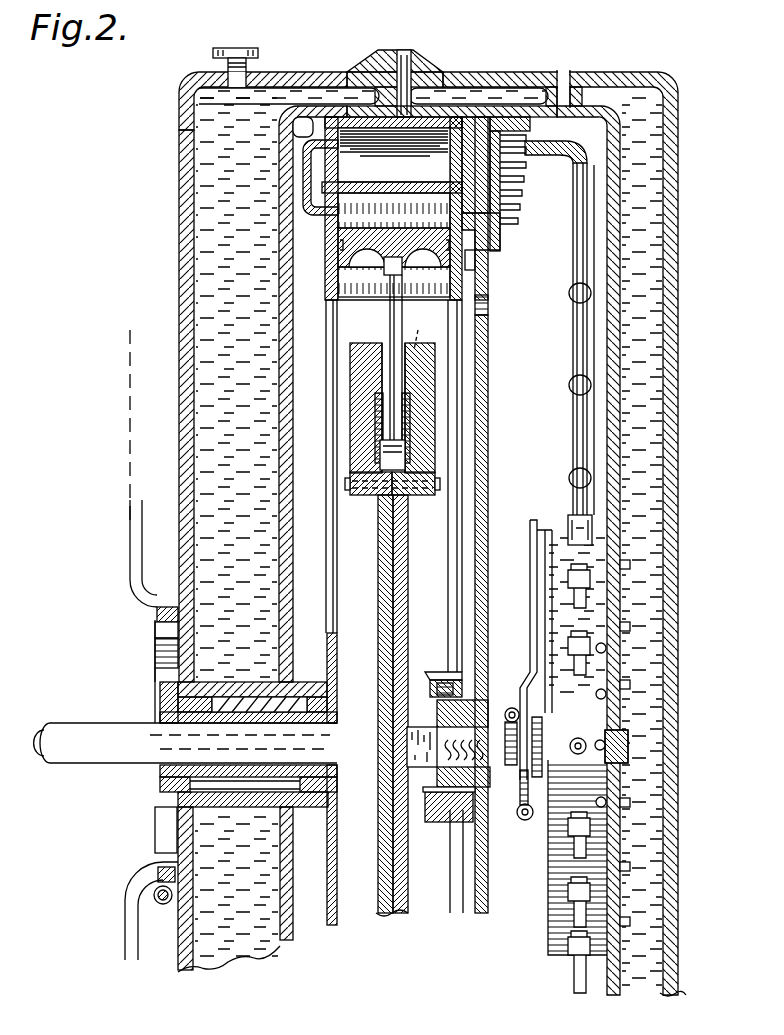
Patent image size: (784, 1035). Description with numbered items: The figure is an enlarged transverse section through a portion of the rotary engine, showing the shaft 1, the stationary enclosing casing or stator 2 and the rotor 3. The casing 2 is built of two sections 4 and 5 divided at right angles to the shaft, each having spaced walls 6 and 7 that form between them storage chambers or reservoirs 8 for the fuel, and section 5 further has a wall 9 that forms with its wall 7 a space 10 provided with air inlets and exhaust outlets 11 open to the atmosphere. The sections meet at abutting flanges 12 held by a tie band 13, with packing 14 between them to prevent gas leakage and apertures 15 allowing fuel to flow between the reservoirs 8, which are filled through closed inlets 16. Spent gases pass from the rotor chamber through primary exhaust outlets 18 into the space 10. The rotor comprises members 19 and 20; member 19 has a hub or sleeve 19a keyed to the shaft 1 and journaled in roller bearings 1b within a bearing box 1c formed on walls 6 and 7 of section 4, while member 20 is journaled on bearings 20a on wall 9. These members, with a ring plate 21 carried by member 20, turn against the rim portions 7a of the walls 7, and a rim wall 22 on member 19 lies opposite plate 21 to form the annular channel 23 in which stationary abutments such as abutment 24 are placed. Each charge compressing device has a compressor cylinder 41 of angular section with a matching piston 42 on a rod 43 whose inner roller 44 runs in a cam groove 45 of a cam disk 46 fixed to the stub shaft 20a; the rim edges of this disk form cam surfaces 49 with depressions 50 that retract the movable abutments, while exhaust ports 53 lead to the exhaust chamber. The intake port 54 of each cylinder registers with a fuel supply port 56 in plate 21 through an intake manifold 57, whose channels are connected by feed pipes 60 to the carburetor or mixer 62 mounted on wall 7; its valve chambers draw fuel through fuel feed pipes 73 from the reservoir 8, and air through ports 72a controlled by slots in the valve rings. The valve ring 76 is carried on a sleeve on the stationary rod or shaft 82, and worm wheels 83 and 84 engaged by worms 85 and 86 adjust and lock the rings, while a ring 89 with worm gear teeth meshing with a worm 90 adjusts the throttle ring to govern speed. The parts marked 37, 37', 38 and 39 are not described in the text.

The shaft 1 is at (72, 768).
The roller bearings 1b is at (282, 698).
The bearing box 1c is at (252, 690).
The stationary enclosing casing or stator 2 is at (178, 470).
The rotor 3 is at (470, 272).
The casing section 4 is at (178, 136).
The casing section 5 is at (672, 135).
The wall 6 is at (180, 388).
The wall 7 is at (620, 362).
The rim portions 7a is at (320, 120).
The storage chambers or reservoirs 8 is at (208, 262).
The wall 9 is at (487, 517).
The space 10 is at (597, 262).
The air inlets and exhaust outlets 11 is at (575, 82).
The abutting flanges 12 is at (398, 55).
The tie band 13 is at (356, 66).
The packing 14 is at (440, 74).
The apertures 15 is at (455, 105).
The inlets 16 is at (214, 56).
The primary exhaust outlets 18 is at (484, 314).
The rotor member 19 is at (338, 568).
The hub or sleeve 19a is at (162, 722).
The rotor member 20 is at (456, 563).
The bearings or stub shaft 20a is at (456, 682).
The ring plate 21 is at (478, 228).
The rim wall 22 is at (306, 118).
The annular channel 23 is at (530, 130).
The stationary abutment 24 is at (440, 150).
The flange 37 is at (144, 644).
The drain pipe 37' is at (122, 553).
The pin 38 is at (162, 906).
The bracket 39 is at (155, 892).
The compressor cylinder 41 is at (332, 258).
The piston 42 is at (397, 205).
The rod 43 is at (392, 326).
The roller 44 is at (378, 420).
The cam groove 45 is at (380, 462).
The cam disk 46 is at (381, 600).
The cam surfaces 49 is at (374, 345).
The depressions 50 is at (424, 328).
The slots or exhaust ports 53 is at (310, 185).
The intake port 54 is at (447, 200).
The fuel supply port 56 is at (475, 190).
The intake manifold 57 is at (515, 172).
The feed pipes 60 is at (573, 348).
The carburetor or mixer 62 is at (565, 845).
The ports 72a is at (606, 694).
The fuel feed pipes 73 is at (630, 626).
The valve ring 76 is at (545, 572).
The stationary rod or shaft 82 is at (630, 752).
The worm wheel 83 is at (548, 776).
The worm wheel 84 is at (447, 822).
The worm 85 is at (512, 790).
The worm 86 is at (520, 716).
The ring 89 is at (520, 705).
The worm 90 is at (527, 822).